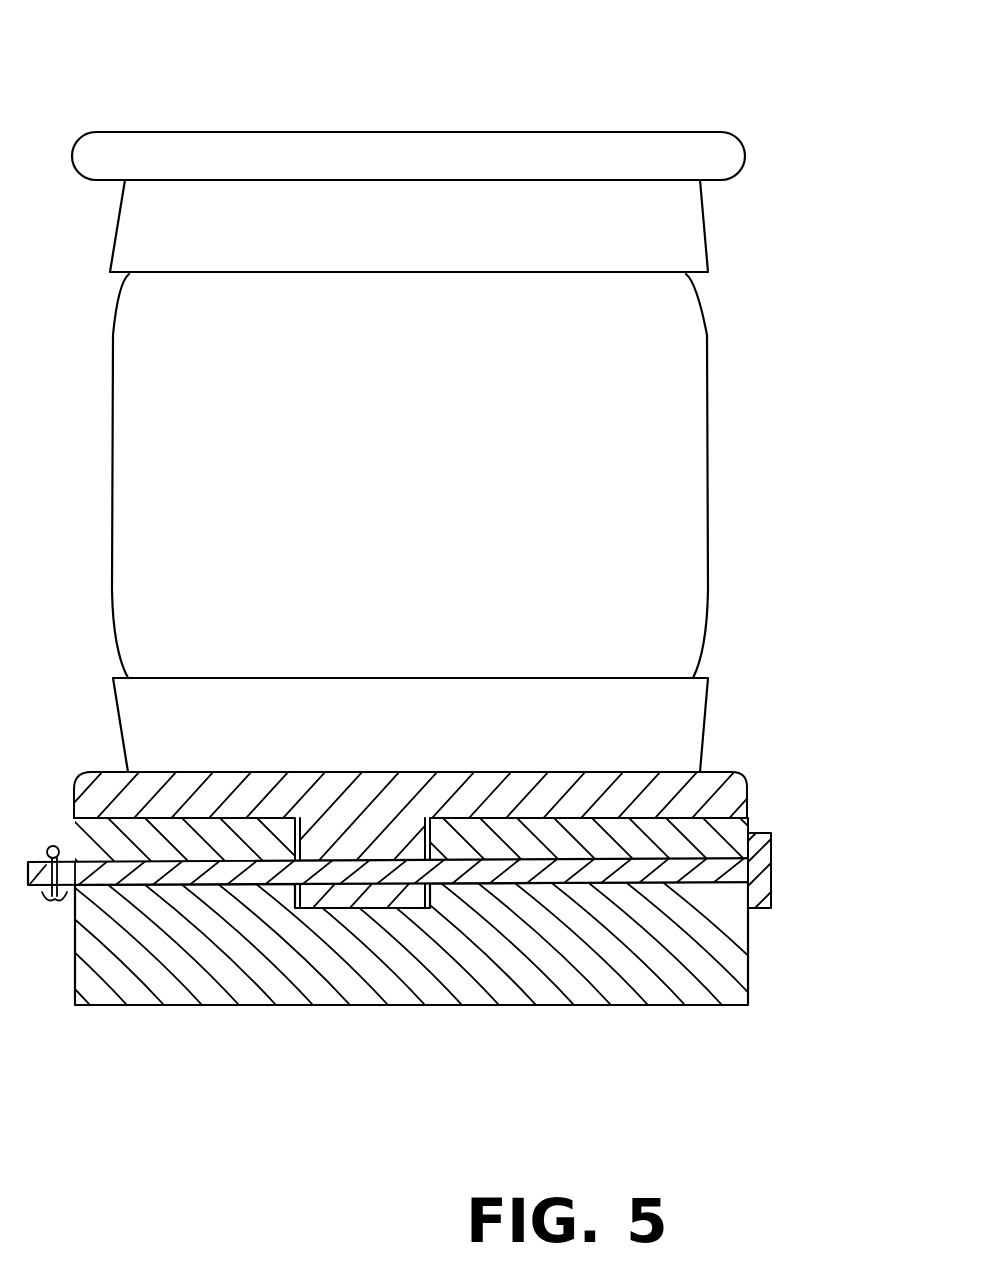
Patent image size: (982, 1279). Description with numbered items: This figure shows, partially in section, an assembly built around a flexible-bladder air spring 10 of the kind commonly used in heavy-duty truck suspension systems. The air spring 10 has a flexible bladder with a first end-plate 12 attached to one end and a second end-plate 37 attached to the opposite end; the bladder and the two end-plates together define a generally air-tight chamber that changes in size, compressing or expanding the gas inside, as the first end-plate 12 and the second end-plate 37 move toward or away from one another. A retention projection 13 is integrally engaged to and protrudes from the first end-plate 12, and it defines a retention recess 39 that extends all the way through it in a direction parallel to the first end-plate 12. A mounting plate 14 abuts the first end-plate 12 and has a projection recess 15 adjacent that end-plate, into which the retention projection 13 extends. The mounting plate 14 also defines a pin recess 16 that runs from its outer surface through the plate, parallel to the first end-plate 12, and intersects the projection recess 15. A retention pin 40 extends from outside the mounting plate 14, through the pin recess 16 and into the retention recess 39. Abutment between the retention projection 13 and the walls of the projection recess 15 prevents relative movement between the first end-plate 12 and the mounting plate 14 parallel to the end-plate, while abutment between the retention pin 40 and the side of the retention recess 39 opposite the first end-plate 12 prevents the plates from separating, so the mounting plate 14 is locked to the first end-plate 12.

The flexible-bladder air spring 10 is at (622, 373).
The first end-plate 12 is at (700, 785).
The retention projection 13 is at (390, 897).
The mounting plate 14 is at (728, 923).
The projection recess 15 is at (433, 888).
The pin recess 16 is at (633, 887).
The second end-plate 37 is at (515, 142).
The retention recess 39 is at (363, 858).
The retention pin 40 is at (715, 867).